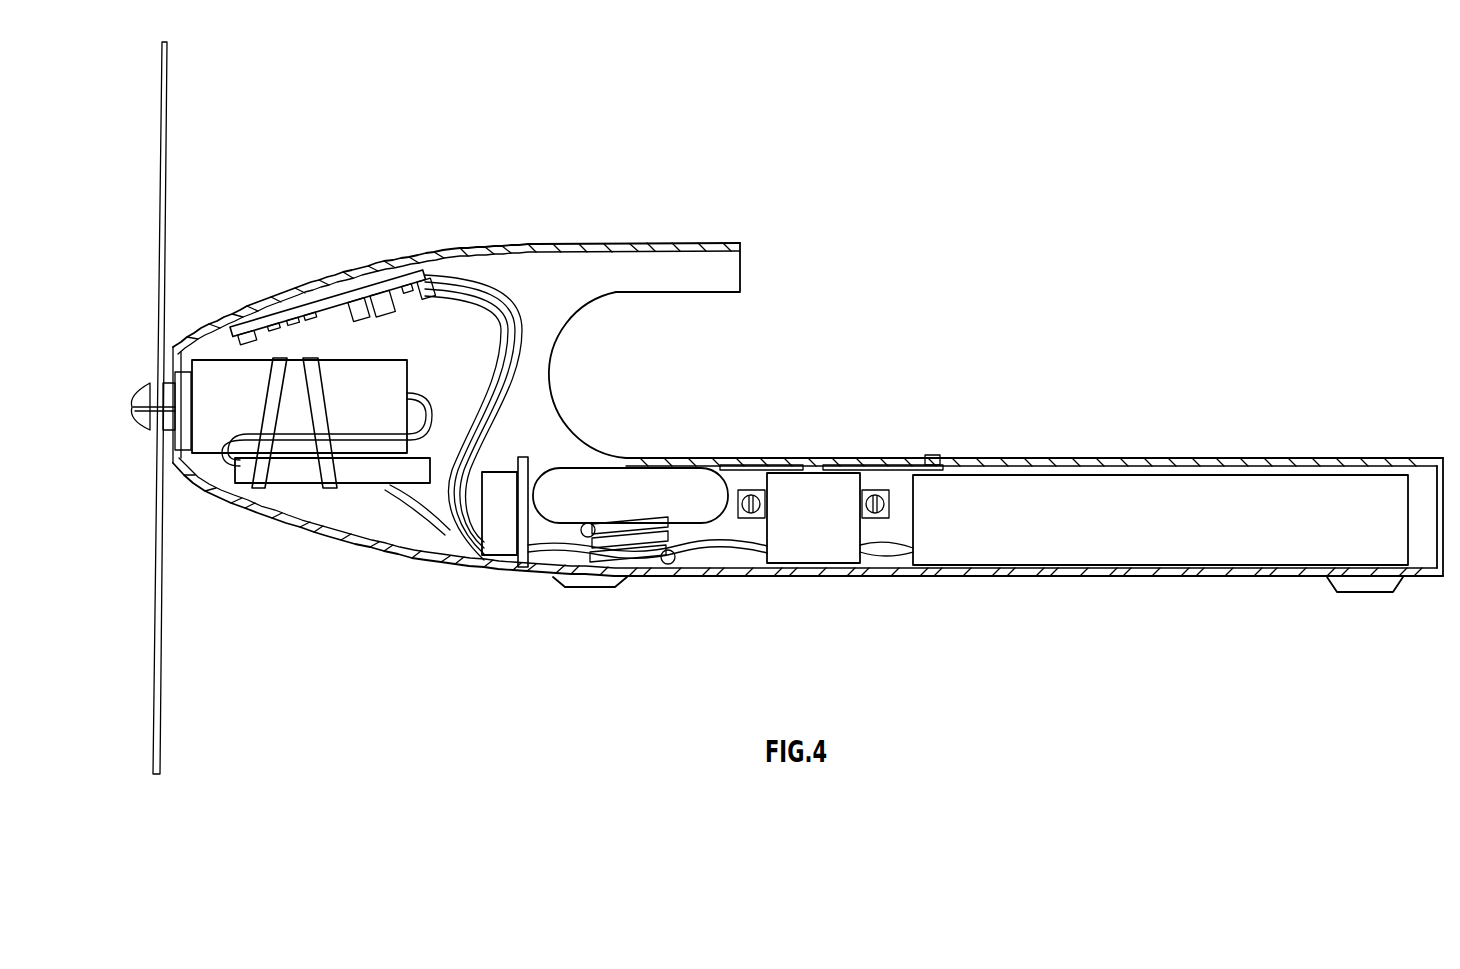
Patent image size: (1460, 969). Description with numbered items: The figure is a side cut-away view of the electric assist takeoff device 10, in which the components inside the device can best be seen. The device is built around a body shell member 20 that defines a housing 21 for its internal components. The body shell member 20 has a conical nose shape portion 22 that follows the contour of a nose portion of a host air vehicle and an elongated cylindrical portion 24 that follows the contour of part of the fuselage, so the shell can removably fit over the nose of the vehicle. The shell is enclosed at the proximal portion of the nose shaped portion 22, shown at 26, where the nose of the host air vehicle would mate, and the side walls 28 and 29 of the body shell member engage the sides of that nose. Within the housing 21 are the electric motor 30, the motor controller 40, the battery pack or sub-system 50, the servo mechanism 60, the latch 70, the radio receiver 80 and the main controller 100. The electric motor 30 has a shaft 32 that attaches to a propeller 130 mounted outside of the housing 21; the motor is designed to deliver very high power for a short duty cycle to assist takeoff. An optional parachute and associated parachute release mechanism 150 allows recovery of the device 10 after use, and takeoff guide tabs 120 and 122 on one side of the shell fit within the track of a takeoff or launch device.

The electric assist takeoff device 10 is at (980, 217).
The body shell member 20 is at (345, 545).
The housing 21 is at (465, 384).
The conical nose shape portion 22 is at (740, 143).
The elongated cylindrical portion 24 is at (1445, 355).
The enclosed proximal portion 26 is at (552, 393).
The side wall 28 is at (705, 293).
The side wall 29 is at (647, 458).
The electric motor 30 is at (385, 360).
The shaft 32 is at (150, 383).
The motor controller 40 is at (363, 487).
The battery pack or sub-system 50 is at (1285, 548).
The servo mechanism 60 is at (815, 548).
The latch 70 is at (868, 462).
The radio receiver 80 is at (388, 283).
The main controller 100 is at (500, 545).
The takeoff guide tab 120 is at (590, 592).
The takeoff guide tab 122 is at (1368, 592).
The propeller 130 is at (158, 632).
The parachute and associated parachute release mechanism 150 is at (690, 510).